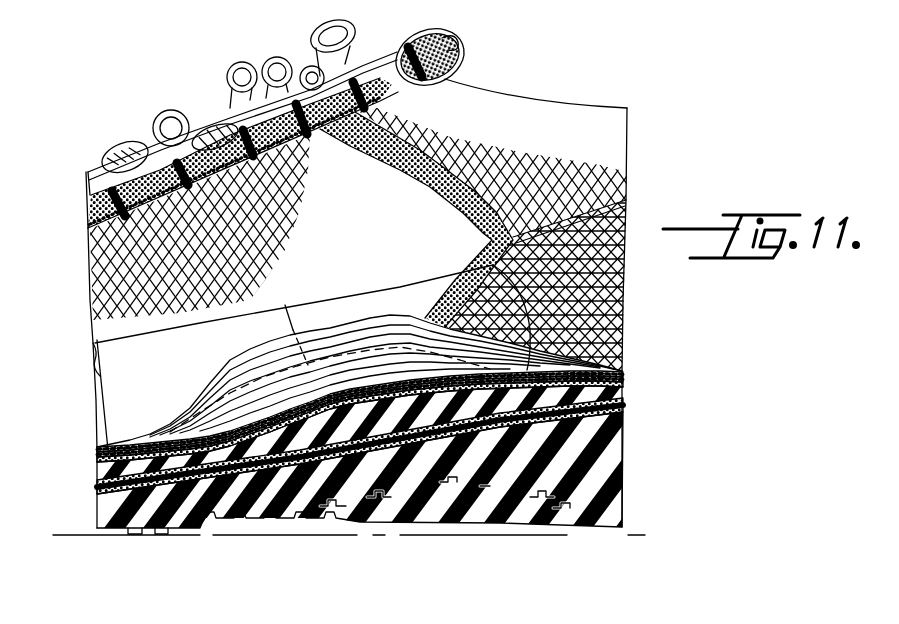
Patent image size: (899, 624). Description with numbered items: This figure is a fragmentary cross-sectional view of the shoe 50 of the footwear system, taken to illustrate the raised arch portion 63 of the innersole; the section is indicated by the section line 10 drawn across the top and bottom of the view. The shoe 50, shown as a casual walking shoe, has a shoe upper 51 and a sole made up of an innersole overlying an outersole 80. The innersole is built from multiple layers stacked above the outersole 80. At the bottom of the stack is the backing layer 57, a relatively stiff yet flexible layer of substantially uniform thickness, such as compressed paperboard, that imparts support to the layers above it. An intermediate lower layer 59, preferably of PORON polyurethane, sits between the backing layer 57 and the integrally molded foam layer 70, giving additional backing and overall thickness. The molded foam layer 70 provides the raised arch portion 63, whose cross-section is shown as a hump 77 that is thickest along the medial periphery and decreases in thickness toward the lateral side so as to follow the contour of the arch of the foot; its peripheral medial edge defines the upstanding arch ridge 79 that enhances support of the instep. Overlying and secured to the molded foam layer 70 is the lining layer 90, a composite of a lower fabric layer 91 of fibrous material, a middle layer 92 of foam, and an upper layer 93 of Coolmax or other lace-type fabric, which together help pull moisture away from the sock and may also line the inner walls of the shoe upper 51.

The section line 10- 10 is at (362, 66).
The shoe 50 is at (680, 180).
The shoe upper 51 is at (583, 126).
The backing layer 57 is at (97, 512).
The intermediate lower layer 59 is at (97, 487).
The raised arch portion 63 is at (312, 303).
The molded foam layer 70 is at (641, 392).
The hump 77 is at (97, 472).
The upstanding arch ridge 79 is at (281, 298).
The outersole 80 is at (583, 532).
The lining layer 90 is at (634, 354).
The lower fabric layer 91 is at (97, 460).
The middle layer 92 is at (97, 454).
The upper layer 93 is at (97, 448).